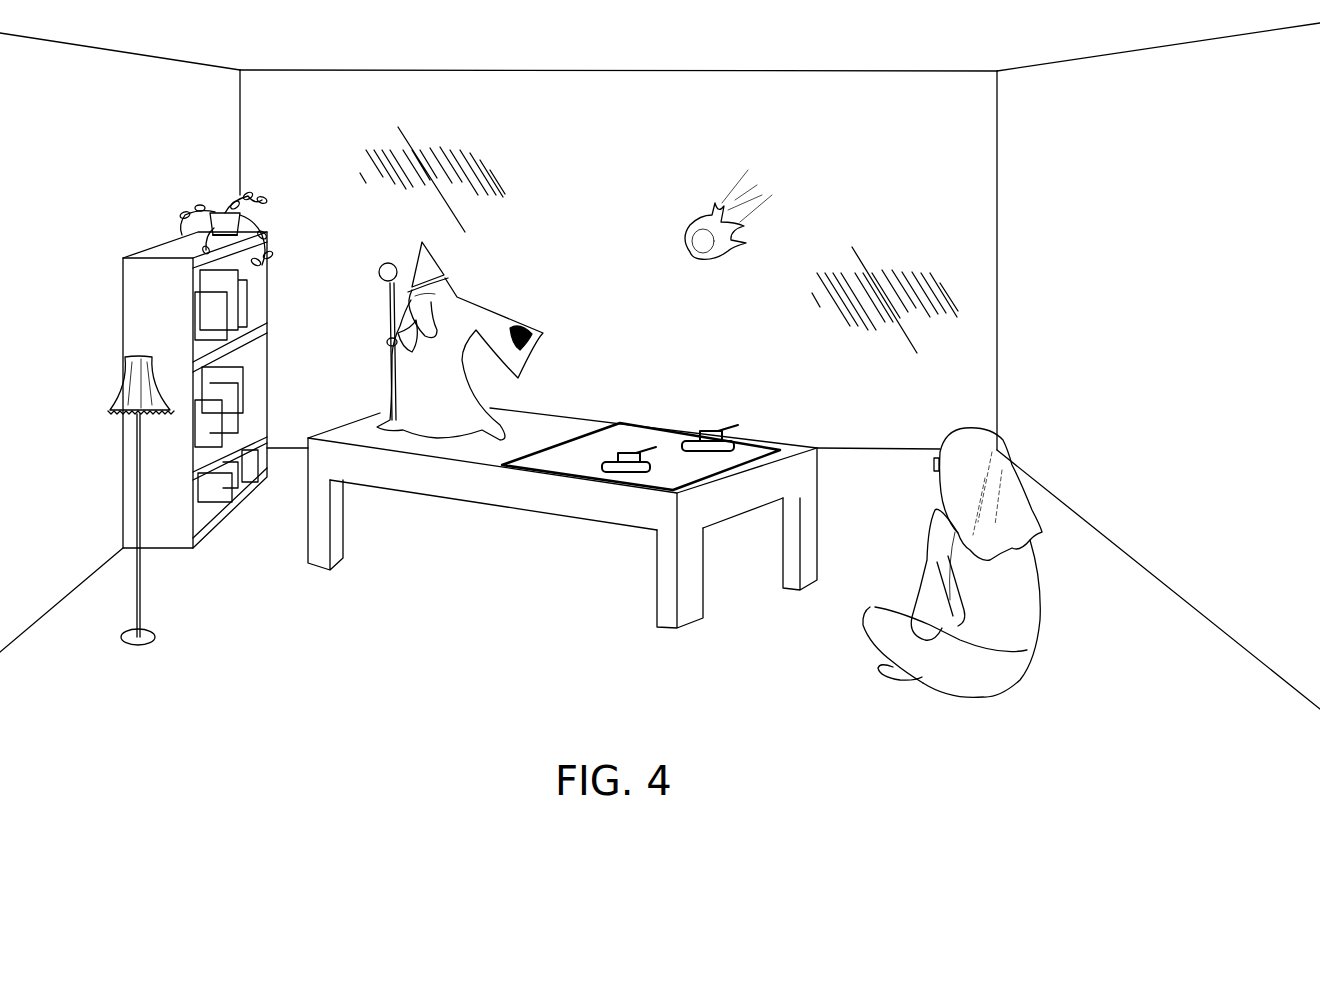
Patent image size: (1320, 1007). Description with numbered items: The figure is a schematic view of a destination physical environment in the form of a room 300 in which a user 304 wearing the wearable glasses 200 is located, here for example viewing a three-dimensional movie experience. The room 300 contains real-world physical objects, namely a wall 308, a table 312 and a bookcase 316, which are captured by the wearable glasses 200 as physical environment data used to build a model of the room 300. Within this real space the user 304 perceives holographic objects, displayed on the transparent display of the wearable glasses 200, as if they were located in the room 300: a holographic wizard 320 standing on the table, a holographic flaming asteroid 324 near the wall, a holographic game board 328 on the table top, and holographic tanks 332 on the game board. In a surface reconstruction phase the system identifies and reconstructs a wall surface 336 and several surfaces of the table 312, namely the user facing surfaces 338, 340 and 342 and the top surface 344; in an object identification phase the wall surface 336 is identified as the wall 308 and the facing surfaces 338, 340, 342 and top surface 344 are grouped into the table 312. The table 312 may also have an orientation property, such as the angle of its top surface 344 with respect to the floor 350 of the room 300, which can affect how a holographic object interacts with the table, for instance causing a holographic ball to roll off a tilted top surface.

The wearable glasses 200 is at (932, 462).
The room 300 is at (754, 86).
The user 304 is at (1038, 617).
The wall 308 is at (619, 218).
The table 312 is at (580, 504).
The bookcase 316 is at (125, 268).
The holographic wizard 320 is at (446, 414).
The holographic flaming asteroid 324 is at (723, 243).
The holographic game board 328 is at (667, 443).
The holographic tanks 332 is at (630, 440).
The wall surface 336 is at (518, 167).
The user facing surface 338 is at (727, 507).
The user facing surface 340 is at (690, 605).
The user facing surface 342 is at (810, 557).
The top surface 344 is at (575, 425).
The floor 350 is at (251, 594).